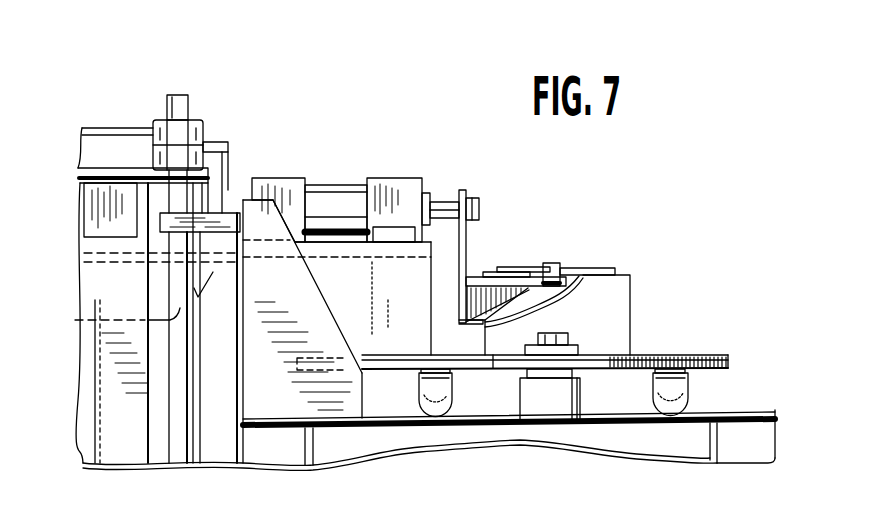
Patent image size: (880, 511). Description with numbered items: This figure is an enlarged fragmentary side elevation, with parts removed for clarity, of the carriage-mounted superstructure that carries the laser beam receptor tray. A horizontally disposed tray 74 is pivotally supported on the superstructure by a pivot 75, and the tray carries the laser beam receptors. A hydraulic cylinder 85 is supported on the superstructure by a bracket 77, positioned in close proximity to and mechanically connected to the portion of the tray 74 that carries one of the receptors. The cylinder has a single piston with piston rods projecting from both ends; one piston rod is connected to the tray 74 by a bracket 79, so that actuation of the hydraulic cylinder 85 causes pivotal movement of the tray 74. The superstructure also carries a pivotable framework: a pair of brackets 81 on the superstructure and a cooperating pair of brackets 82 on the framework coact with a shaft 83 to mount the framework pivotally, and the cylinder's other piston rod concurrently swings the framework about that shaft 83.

The tray 74 is at (661, 333).
The pivot 75 is at (566, 333).
The bracket 77 is at (365, 293).
The bracket 79 is at (467, 257).
The brackets 81 is at (224, 228).
The brackets 82 is at (84, 163).
The shaft 83 is at (190, 112).
The hydraulic cylinder 85 is at (347, 186).